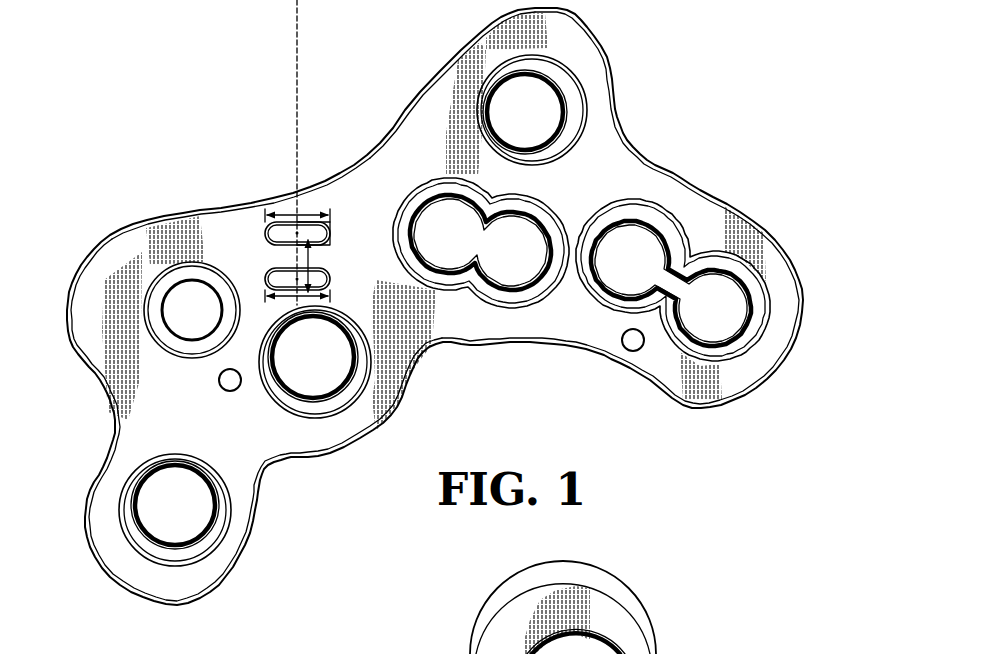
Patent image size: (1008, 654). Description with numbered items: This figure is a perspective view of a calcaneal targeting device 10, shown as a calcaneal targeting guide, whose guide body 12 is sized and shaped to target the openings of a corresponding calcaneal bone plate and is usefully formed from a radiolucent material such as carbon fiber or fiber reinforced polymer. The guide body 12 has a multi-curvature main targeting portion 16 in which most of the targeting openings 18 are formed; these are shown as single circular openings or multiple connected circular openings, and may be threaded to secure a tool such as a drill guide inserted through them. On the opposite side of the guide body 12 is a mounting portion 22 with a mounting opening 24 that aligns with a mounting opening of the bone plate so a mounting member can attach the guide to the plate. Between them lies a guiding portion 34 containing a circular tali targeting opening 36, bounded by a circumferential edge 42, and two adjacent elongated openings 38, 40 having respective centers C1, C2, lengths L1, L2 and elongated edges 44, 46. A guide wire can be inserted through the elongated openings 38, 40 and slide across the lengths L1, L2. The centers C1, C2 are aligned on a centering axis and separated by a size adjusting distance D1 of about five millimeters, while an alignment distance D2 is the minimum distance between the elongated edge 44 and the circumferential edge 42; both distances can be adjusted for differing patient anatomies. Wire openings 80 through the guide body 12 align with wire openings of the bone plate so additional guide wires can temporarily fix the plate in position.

The calcaneal targeting device 10 is at (409, 306).
The guide body 12 is at (382, 136).
The main targeting portion 16 is at (678, 139).
The targeting openings 18 is at (535, 113).
The mounting portion 22 is at (96, 420).
The mounting opening 24 is at (183, 303).
The guiding portion 34 is at (246, 184).
The tali targeting opening 36 is at (318, 380).
The elongated opening 38 is at (324, 272).
The elongated opening 40 is at (319, 222).
The circumferential edge 42 is at (300, 328).
The elongated edge 44 is at (252, 283).
The elongated edge 46 is at (266, 244).
The wire openings 80 is at (226, 393).
The length L1 is at (268, 298).
The length L2 is at (286, 212).
The center C1 is at (291, 277).
The center C2 is at (299, 224).
The size adjusting distance D1 is at (312, 262).
The alignment distance D2 is at (312, 303).